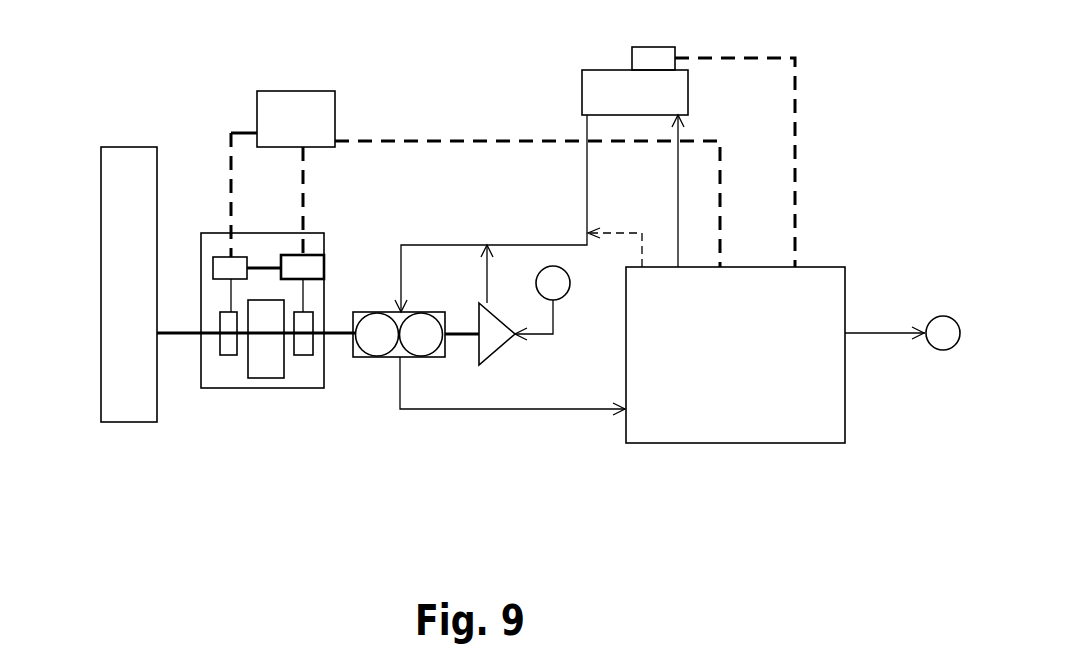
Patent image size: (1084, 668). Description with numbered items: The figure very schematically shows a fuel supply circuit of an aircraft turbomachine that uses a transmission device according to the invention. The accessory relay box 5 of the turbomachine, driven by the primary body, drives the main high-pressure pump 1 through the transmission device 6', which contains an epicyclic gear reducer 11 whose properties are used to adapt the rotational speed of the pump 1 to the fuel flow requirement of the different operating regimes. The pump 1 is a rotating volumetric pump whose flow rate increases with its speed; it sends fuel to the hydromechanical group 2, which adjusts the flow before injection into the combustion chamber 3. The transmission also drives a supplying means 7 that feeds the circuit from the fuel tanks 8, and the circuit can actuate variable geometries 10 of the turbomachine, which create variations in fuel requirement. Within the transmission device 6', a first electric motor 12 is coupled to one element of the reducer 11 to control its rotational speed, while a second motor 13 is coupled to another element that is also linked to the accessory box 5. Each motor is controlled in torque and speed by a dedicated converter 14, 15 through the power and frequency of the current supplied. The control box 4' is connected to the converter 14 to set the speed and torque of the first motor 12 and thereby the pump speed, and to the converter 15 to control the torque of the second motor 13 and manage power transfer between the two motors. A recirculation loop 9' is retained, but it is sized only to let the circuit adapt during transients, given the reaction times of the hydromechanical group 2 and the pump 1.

The main high-pressure pump 1 is at (363, 359).
The hydromechanical group 2 is at (763, 388).
The combustion chamber 3 is at (902, 333).
The control box 4' is at (296, 90).
The accessory relay box 5 is at (132, 176).
The transmission device 6' is at (273, 382).
The supplying means 7 is at (493, 344).
The fuel tanks 8 is at (542, 303).
The recirculation loop 9' is at (615, 216).
The variable geometries 10 is at (610, 88).
The epicyclic gear reducer 11 is at (260, 380).
The first electric motor 12 is at (225, 357).
The second motor 13 is at (300, 357).
The converter 14 is at (217, 268).
The converter 15 is at (318, 265).